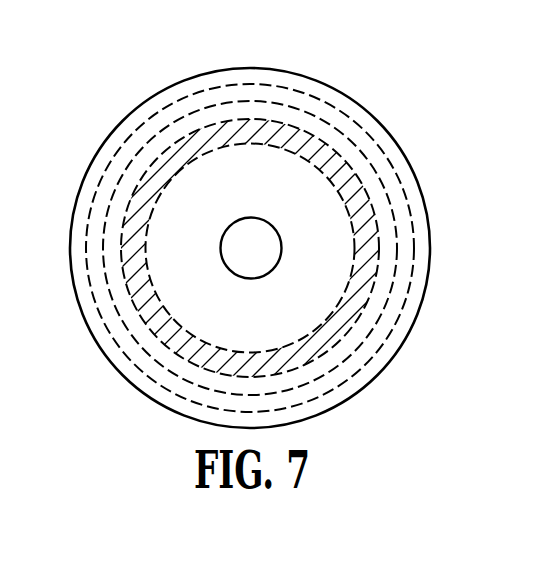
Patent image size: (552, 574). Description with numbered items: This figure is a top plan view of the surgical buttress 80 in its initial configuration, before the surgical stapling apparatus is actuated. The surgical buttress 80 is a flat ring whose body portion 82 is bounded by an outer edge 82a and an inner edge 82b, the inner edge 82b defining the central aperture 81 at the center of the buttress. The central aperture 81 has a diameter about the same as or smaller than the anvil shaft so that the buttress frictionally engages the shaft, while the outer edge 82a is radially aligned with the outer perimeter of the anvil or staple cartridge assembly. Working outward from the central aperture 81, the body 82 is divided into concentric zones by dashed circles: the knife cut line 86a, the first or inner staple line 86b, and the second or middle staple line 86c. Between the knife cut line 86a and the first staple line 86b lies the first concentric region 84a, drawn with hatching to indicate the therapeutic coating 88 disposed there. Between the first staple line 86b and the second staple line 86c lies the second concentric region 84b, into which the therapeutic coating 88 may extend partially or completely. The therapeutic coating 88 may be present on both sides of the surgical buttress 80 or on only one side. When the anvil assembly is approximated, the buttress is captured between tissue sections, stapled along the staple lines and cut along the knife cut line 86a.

The surgical buttress 80 is at (147, 77).
The central aperture 81 is at (264, 260).
The body portion 82 is at (258, 235).
The outer edge 82a is at (255, 67).
The inner edge 82b is at (317, 179).
The first concentric region 84a is at (276, 273).
The second concentric region 84b is at (301, 272).
The knife cut line 86a is at (302, 363).
The first staple line 86b is at (346, 363).
The second staple line 86c is at (378, 362).
The therapeutic coating 88 is at (152, 322).